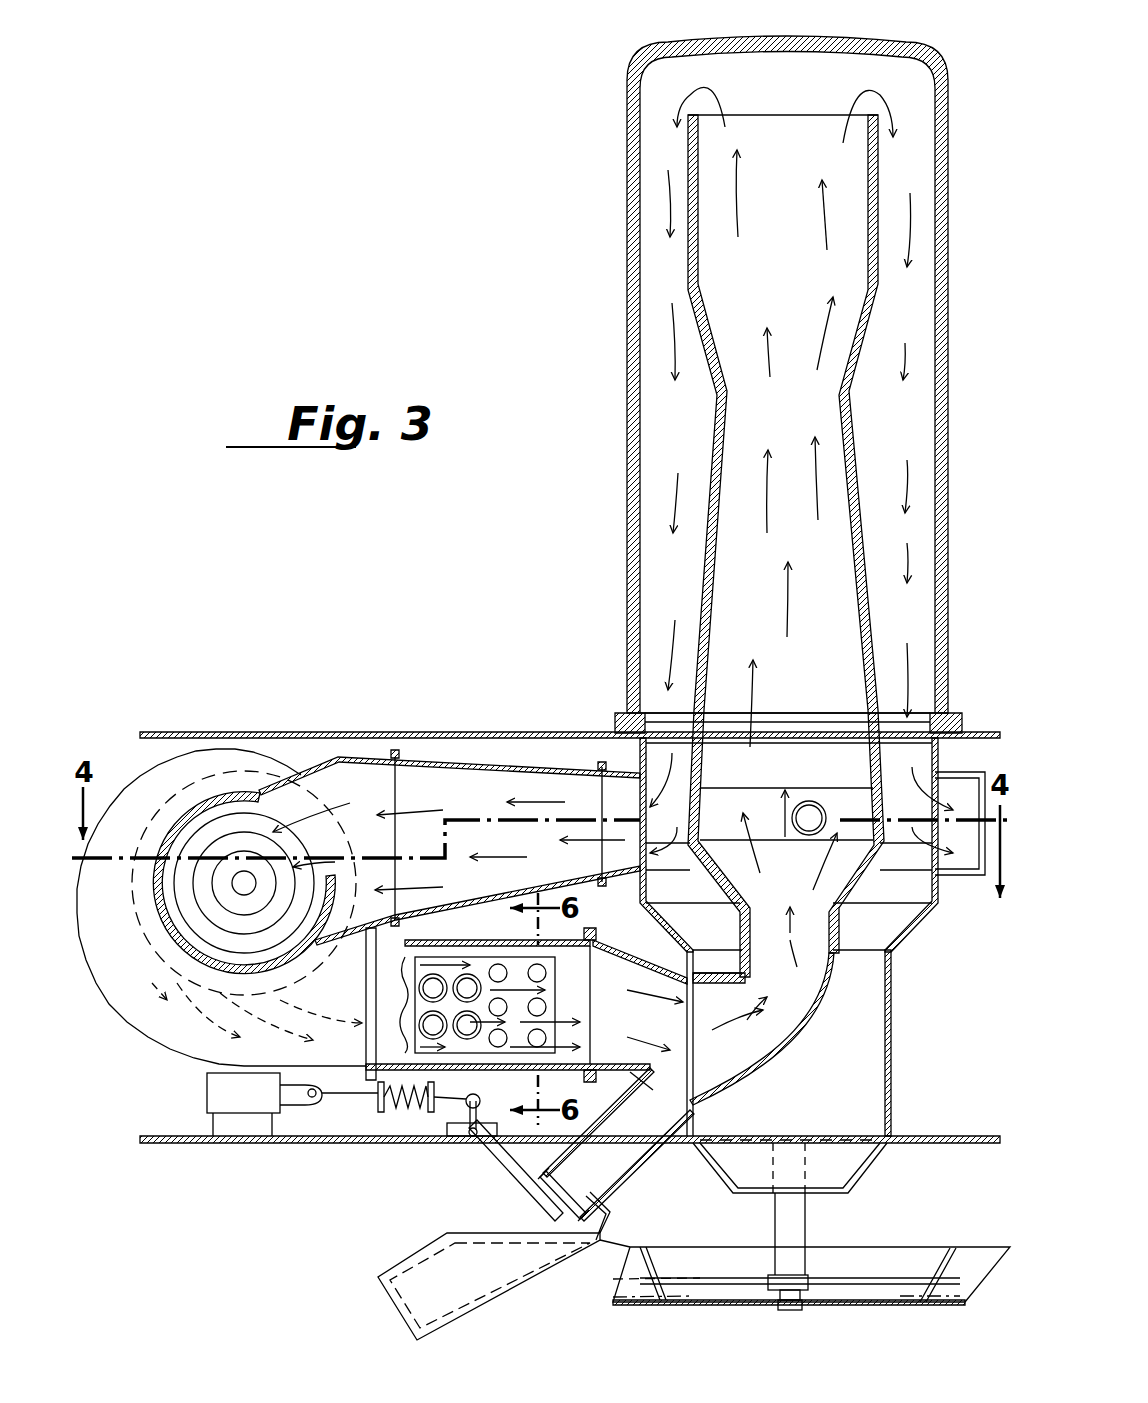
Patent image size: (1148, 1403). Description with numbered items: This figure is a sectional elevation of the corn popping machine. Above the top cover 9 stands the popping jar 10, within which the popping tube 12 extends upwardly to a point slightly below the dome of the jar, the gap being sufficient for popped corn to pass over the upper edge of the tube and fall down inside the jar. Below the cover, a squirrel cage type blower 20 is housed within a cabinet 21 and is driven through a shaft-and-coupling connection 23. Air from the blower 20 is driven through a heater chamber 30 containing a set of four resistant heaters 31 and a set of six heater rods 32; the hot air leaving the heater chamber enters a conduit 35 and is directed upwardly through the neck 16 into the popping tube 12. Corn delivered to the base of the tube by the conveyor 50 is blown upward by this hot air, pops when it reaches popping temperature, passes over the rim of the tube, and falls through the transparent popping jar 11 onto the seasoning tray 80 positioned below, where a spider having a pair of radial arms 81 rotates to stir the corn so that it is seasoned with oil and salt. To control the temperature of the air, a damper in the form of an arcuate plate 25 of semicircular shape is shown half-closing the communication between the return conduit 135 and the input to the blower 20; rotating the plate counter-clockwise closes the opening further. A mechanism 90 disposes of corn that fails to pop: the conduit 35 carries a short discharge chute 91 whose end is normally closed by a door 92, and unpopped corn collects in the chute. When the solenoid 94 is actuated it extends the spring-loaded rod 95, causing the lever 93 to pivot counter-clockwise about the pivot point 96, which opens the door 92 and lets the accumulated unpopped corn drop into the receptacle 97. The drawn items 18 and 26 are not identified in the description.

The top cover 9 is at (518, 732).
The popping jar 10 is at (725, 509).
The transparent popping jar 11 is at (626, 101).
The popping tube 12 is at (690, 152).
The neck 16 is at (845, 932).
The side outlet 18 is at (985, 853).
The squirrel cage type blower 20 is at (237, 827).
The cabinet 21 is at (190, 775).
The shaft-and-coupling connection 23 is at (240, 880).
The arcuate plate 25 is at (307, 915).
The blower casing ring 26 is at (175, 808).
The heater chamber 30 is at (568, 984).
The resistant heaters 31 is at (433, 975).
The heater rods 32 is at (500, 963).
The conduit 35 is at (840, 1033).
The conveyor 50 is at (814, 806).
The seasoning tray 80 is at (855, 1302).
The radial arms 81 is at (695, 1278).
The mechanism 90 is at (512, 1193).
The discharge chute 91 is at (622, 1140).
The door 92 is at (562, 1200).
The lever 93 is at (510, 1158).
The solenoid 94 is at (246, 1120).
The spring-loaded rod 95 is at (400, 1112).
The pivot point 96 is at (468, 1140).
The receptacle 97 is at (422, 1300).
The return conduit 135 is at (455, 758).